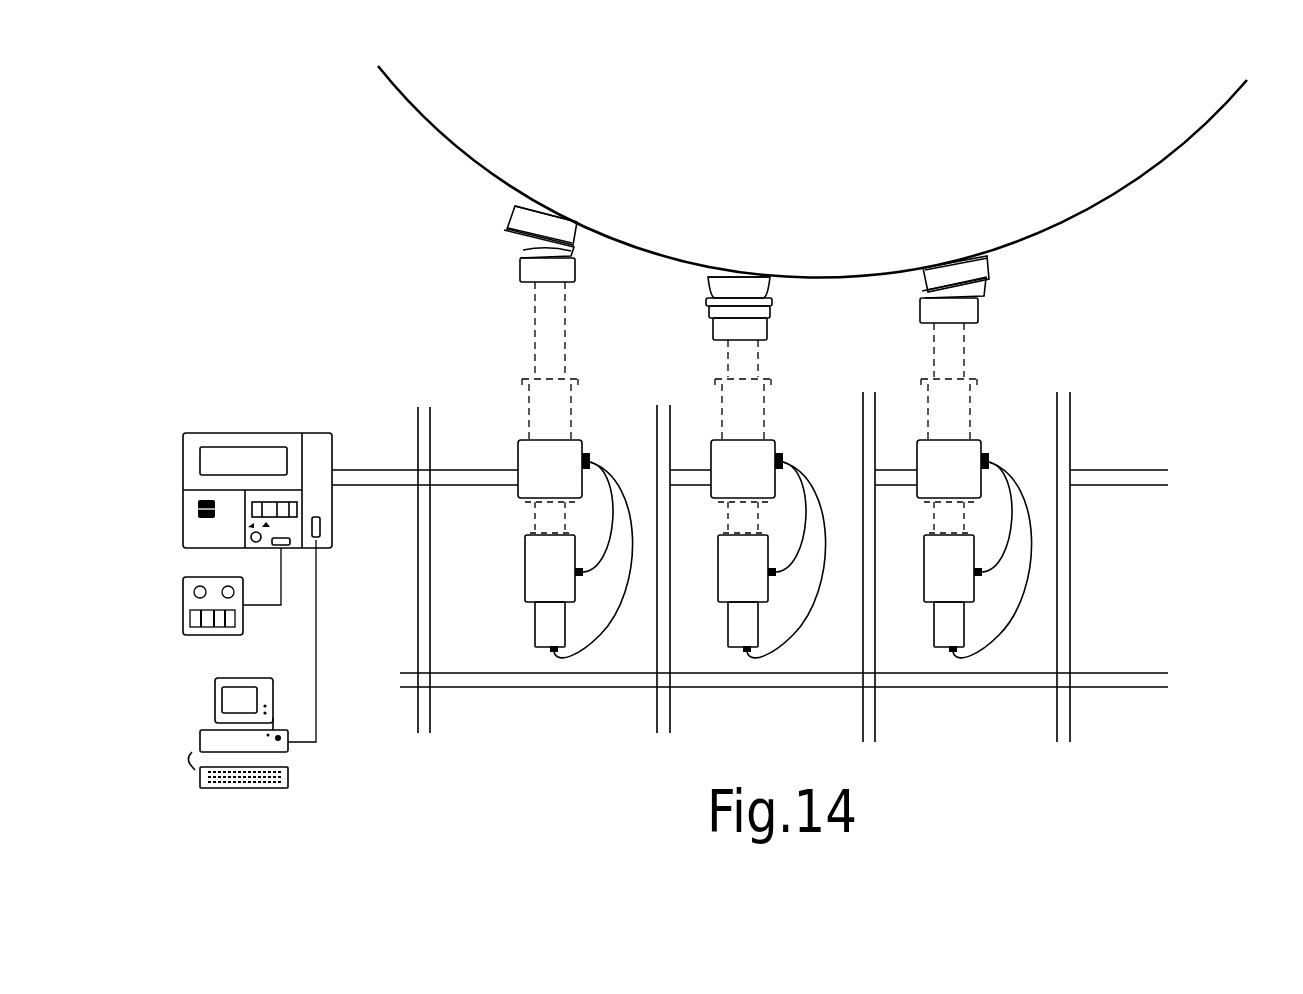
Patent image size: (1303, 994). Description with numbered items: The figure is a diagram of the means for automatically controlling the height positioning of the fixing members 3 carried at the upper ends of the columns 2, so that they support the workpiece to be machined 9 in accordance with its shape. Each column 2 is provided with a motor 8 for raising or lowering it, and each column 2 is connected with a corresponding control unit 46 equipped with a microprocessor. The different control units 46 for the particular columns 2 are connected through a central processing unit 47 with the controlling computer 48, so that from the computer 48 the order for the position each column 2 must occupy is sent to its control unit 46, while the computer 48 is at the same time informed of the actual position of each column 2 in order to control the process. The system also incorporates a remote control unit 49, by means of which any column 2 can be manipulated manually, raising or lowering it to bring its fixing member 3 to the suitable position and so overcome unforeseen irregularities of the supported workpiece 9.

The columns 2 is at (738, 358).
The fixing member 3 is at (966, 283).
The motor 8 is at (953, 590).
The workpiece to be machined 9 is at (458, 149).
The control unit 46 is at (948, 462).
The central processing unit (CPU) 47 is at (245, 432).
The controlling computer 48 is at (195, 734).
The remote control unit 49 is at (180, 610).